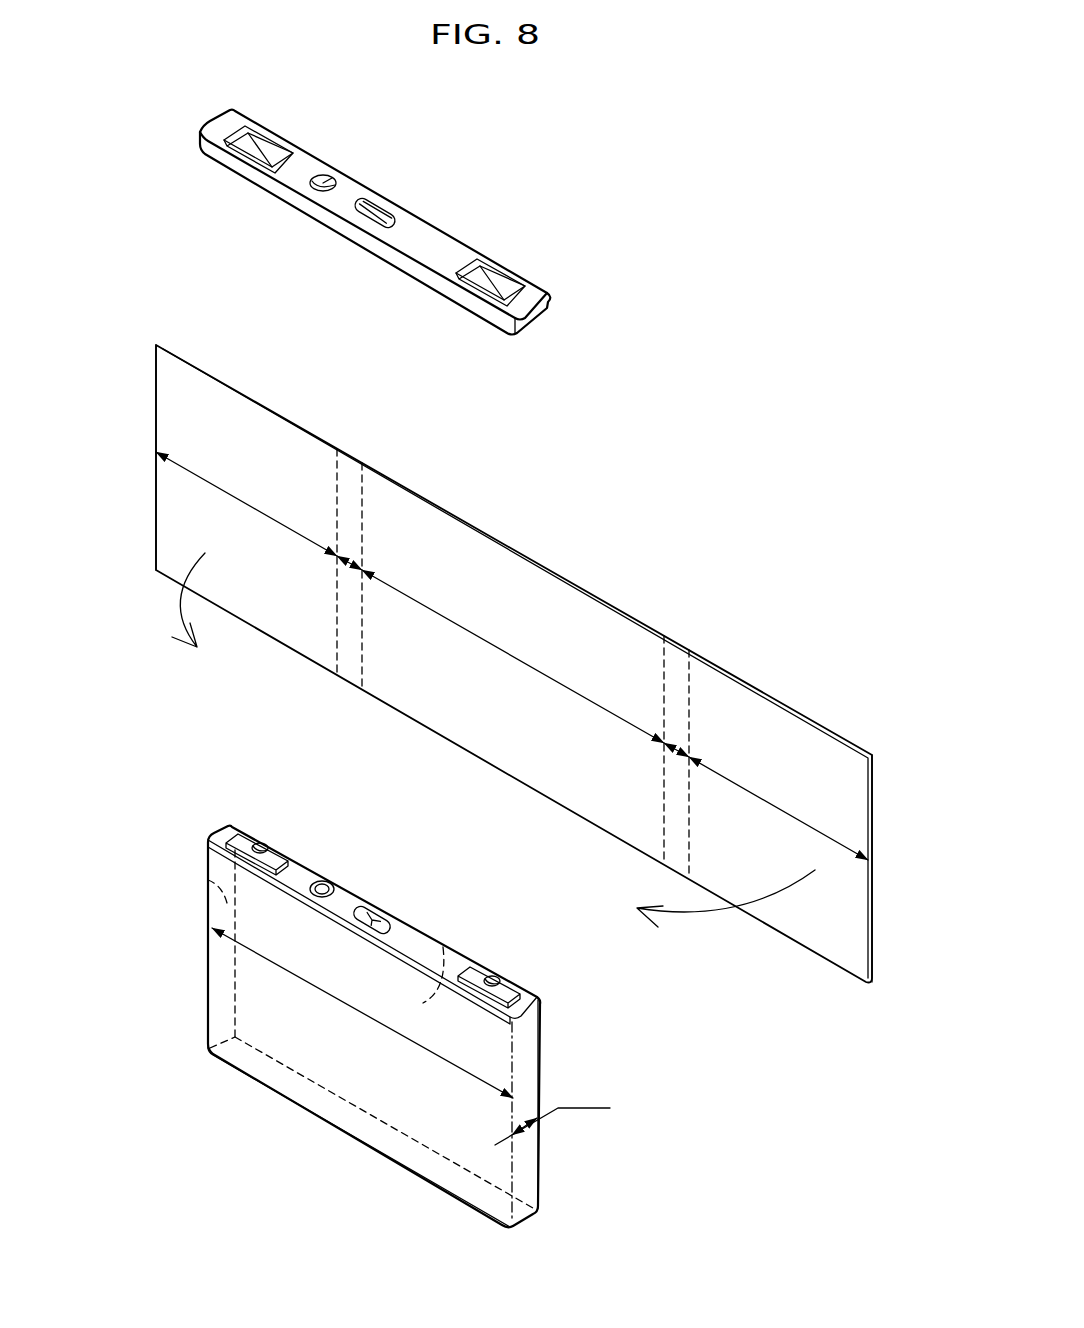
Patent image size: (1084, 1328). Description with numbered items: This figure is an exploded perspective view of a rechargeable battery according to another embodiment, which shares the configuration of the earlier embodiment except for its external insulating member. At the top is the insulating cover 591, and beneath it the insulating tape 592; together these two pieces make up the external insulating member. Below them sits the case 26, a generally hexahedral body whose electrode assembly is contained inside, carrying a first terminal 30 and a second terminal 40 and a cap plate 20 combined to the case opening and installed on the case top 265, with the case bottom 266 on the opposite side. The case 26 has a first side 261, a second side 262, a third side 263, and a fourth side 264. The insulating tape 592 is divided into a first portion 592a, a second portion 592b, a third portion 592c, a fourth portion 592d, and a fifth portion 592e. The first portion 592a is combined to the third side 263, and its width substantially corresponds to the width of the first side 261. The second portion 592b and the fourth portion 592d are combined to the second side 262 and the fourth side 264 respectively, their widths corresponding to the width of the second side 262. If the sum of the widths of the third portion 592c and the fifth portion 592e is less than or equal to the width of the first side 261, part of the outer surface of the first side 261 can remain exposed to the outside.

The insulating cover 591 is at (535, 292).
The insulating tape 592 is at (514, 655).
The first portion 592a is at (505, 580).
The second portion 592b is at (678, 660).
The third portion 592c is at (775, 730).
The fourth portion 592d is at (352, 475).
The fifth portion 592e is at (250, 410).
The cap plate 20 is at (369, 994).
The case 26 is at (303, 1088).
The first terminal 30 is at (254, 833).
The second terminal 40 is at (506, 970).
The first side 261 is at (227, 997).
The second side 262 is at (522, 1057).
The third side 263 is at (445, 947).
The fourth side 264 is at (208, 879).
The case top 265 is at (345, 900).
The case bottom 266 is at (413, 1148).